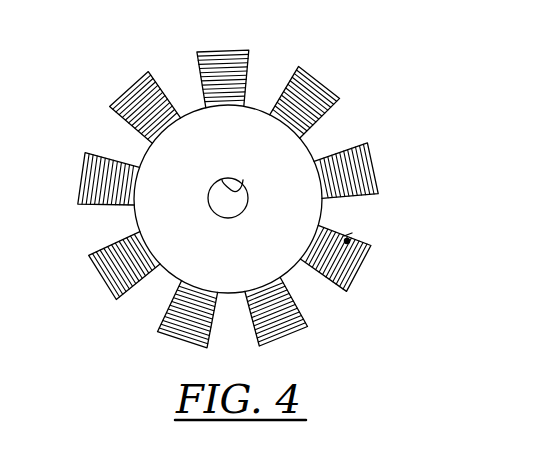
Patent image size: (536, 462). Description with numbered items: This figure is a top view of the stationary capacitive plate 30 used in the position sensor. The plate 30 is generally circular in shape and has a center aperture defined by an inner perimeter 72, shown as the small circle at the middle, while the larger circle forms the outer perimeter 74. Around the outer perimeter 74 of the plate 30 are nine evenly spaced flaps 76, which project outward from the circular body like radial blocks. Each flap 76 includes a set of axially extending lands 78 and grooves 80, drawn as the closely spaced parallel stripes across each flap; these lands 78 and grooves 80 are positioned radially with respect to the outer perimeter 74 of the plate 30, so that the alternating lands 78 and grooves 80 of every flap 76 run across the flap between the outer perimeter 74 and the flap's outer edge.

The stationary capacitive plate 30 is at (327, 82).
The inner perimeter 72 is at (243, 180).
The outer perimeter 74 is at (304, 143).
The flap 76 is at (376, 170).
The land 78 is at (347, 240).
The groove 80 is at (350, 236).